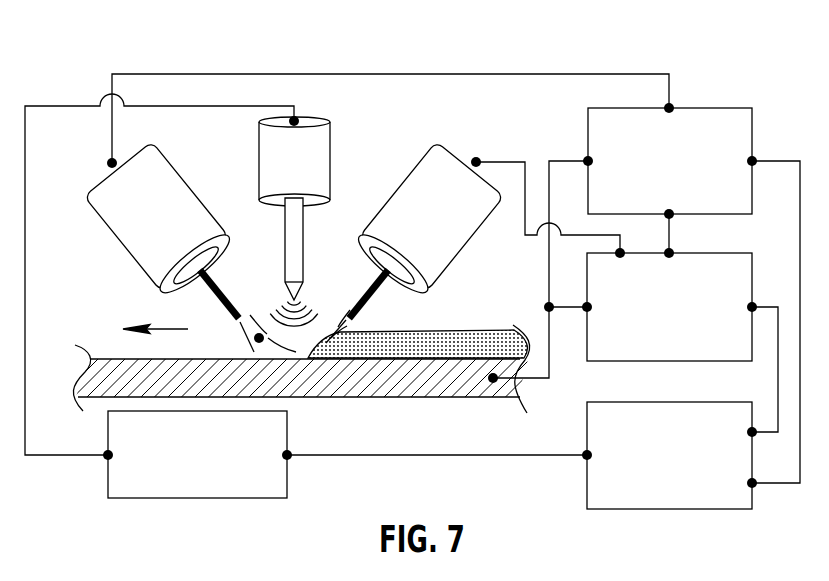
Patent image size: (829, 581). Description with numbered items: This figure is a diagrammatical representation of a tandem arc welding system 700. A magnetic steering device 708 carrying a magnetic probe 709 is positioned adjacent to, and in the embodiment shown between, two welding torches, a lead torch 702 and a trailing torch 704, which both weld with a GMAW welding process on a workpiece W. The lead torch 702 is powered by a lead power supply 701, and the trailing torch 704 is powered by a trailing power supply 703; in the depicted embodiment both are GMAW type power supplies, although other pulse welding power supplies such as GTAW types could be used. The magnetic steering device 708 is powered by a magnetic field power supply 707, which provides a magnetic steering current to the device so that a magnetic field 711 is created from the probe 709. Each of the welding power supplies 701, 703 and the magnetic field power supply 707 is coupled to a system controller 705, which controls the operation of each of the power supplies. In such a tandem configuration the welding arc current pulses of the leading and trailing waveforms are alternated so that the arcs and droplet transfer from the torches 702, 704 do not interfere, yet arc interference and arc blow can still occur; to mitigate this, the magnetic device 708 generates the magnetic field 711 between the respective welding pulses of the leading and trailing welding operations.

The welding system 700 is at (242, 64).
The lead power supply 701 is at (703, 108).
The lead torch 702 is at (164, 223).
The trailing power supply 703 is at (720, 253).
The trailing torch 704 is at (452, 220).
The system controller 705 is at (688, 510).
The magnetic field power supply 707 is at (203, 498).
The magnetic steering device 708 is at (331, 158).
The magnetic probe 709 is at (284, 240).
The magnetic field 711 is at (318, 305).
The workpiece W is at (371, 398).